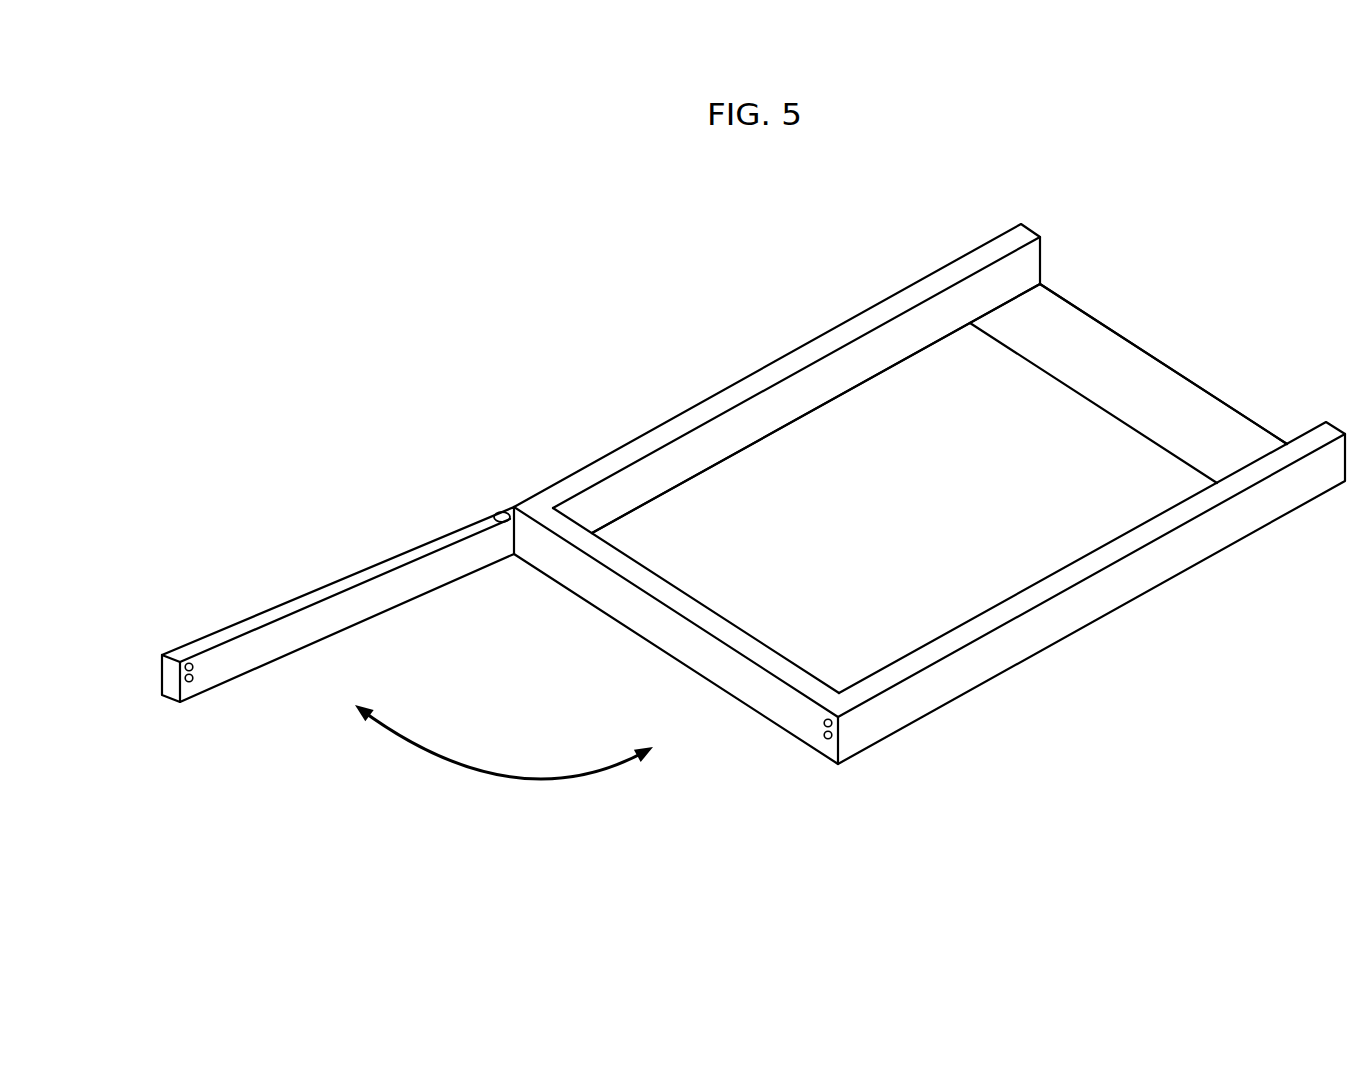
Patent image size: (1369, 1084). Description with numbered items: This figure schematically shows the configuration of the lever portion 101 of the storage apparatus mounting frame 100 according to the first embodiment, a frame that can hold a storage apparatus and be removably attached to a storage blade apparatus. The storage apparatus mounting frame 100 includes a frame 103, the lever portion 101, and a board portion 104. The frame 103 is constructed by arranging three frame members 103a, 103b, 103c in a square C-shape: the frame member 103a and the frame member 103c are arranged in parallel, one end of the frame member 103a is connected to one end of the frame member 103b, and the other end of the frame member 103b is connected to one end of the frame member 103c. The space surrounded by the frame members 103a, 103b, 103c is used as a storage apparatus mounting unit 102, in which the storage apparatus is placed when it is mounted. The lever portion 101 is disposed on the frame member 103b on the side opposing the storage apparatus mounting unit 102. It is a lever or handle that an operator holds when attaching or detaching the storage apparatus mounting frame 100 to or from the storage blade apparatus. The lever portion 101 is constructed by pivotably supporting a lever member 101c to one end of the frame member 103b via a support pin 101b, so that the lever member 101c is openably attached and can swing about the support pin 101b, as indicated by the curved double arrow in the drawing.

The storage apparatus mounting frame 100 is at (1023, 793).
The lever portion 101 is at (147, 753).
The support pin 101b is at (507, 508).
The lever member 101c is at (305, 598).
The storage apparatus mounting unit 102 is at (804, 477).
The frame 103 is at (694, 336).
The frame member 103a is at (957, 268).
The frame member 103b is at (652, 627).
The frame member 103c is at (1048, 628).
The board portion 104 is at (1160, 342).